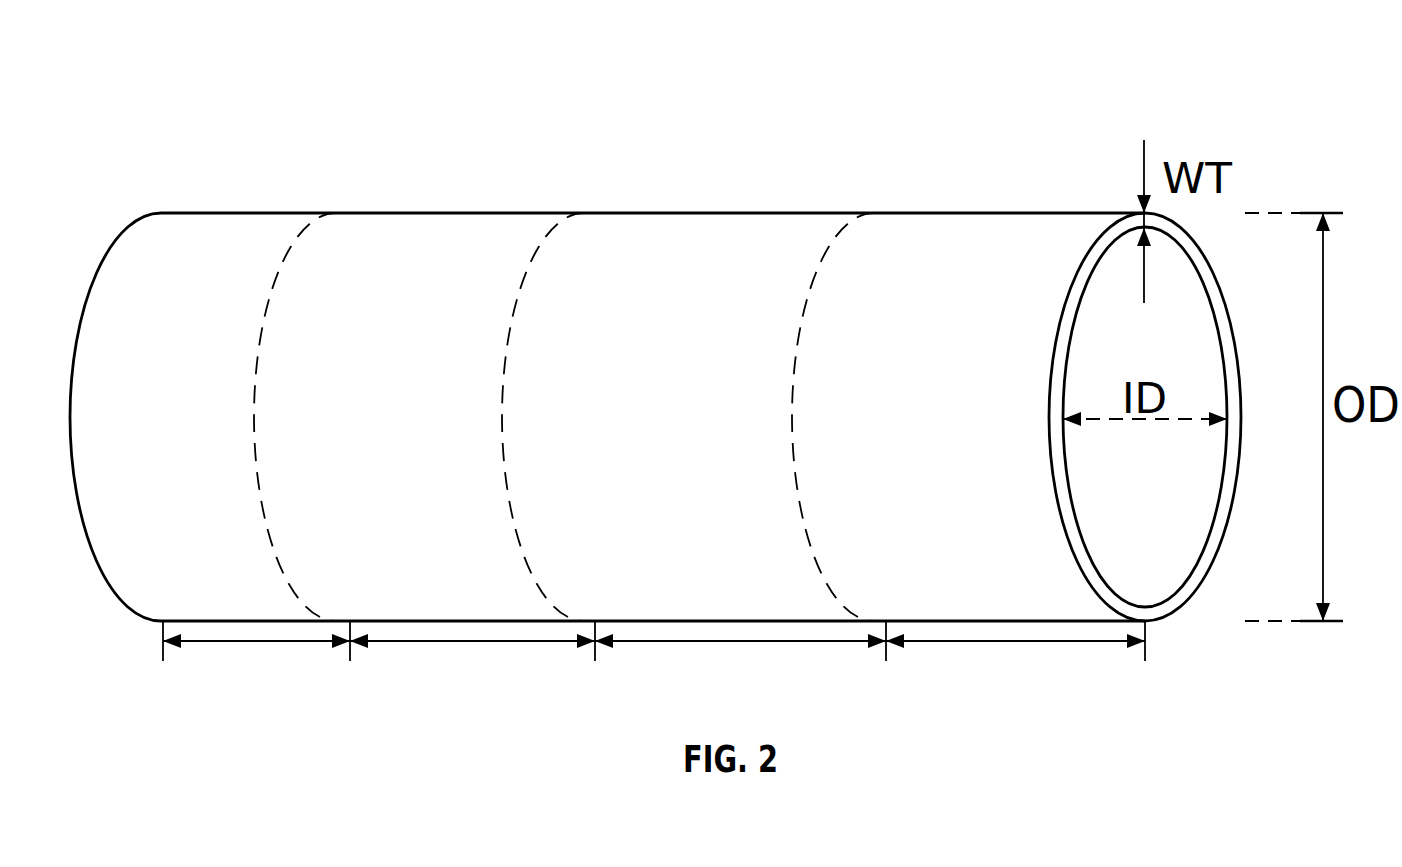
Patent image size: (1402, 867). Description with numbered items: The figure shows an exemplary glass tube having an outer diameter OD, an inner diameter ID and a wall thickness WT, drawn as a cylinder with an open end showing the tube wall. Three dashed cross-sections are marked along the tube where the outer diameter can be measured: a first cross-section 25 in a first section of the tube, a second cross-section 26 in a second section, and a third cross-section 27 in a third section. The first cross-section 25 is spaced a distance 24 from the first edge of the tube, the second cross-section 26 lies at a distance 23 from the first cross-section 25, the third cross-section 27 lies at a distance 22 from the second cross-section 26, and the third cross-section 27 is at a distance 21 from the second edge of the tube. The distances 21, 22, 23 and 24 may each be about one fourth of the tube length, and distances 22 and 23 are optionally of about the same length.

The distance 21 is at (1015, 656).
The distance 22 is at (740, 656).
The distance 23 is at (472, 656).
The distance 24 is at (256, 656).
The first cross-section 25 is at (338, 213).
The second cross-section 26 is at (587, 213).
The third cross-section 27 is at (877, 213).